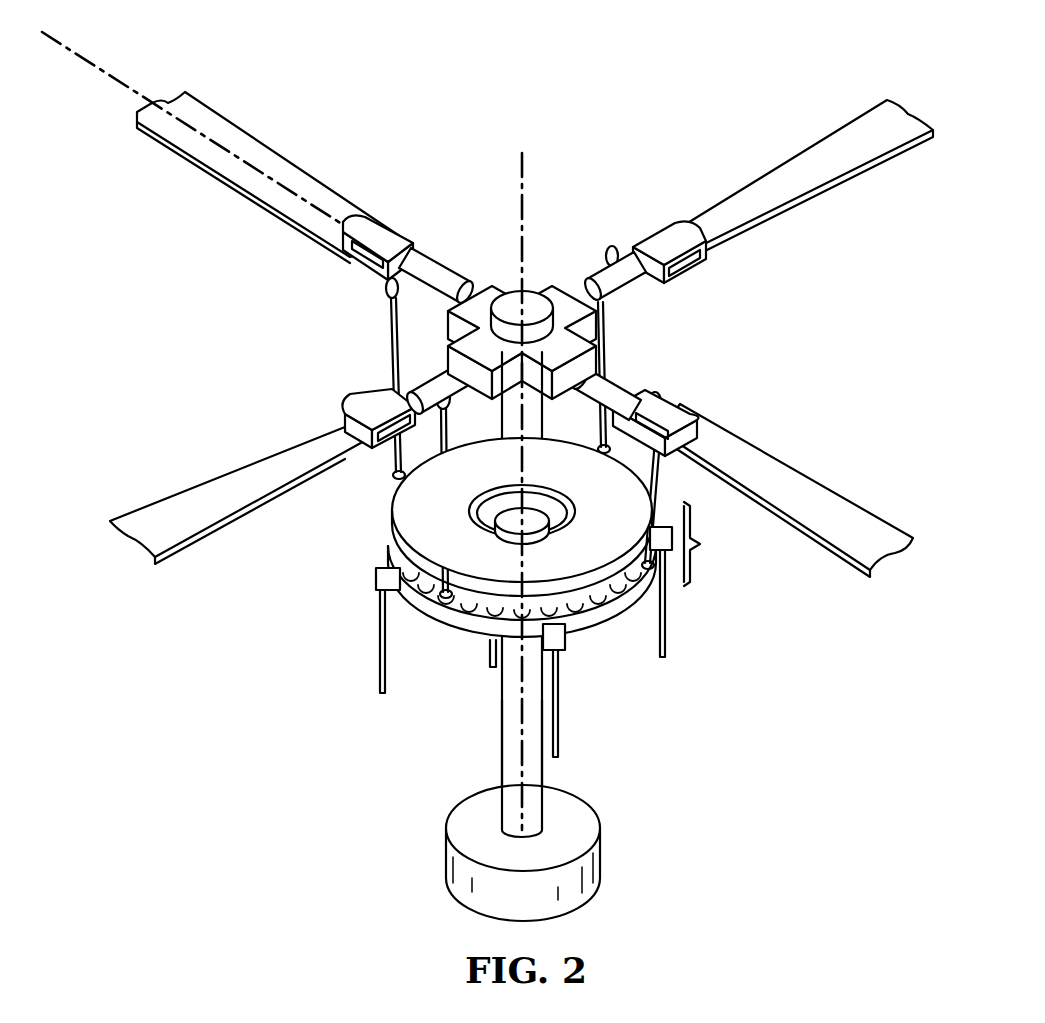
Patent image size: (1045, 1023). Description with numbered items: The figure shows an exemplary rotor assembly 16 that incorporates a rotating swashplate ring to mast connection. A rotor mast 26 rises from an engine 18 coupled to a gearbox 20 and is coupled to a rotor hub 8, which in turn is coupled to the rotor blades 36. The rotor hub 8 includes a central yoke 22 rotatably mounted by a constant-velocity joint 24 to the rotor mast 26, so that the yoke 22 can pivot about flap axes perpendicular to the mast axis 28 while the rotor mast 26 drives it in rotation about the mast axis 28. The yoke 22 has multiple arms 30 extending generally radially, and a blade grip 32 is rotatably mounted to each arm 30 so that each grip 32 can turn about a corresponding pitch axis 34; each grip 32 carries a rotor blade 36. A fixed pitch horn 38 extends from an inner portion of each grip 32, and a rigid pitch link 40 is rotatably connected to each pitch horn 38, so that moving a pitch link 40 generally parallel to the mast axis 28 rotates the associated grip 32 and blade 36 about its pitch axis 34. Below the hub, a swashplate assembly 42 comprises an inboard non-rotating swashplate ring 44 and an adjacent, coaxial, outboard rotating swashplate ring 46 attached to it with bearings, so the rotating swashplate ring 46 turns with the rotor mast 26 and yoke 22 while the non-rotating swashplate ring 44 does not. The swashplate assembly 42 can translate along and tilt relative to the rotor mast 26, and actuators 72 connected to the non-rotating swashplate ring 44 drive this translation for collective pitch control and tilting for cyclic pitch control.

The rotor hub 8 is at (720, 321).
The rotor assembly 16 is at (578, 90).
The engine 18 is at (574, 810).
The gearbox 20 is at (600, 862).
The central yoke 22 is at (487, 292).
The constant-velocity joint 24 is at (538, 290).
The rotor mast 26 is at (502, 738).
The mast axis 28 is at (523, 183).
The arms 30 is at (464, 292).
The blade grip 32 is at (418, 263).
The pitch axis 34 is at (122, 82).
The rotor blades 36 is at (275, 163).
The fixed pitch horn 38 is at (380, 296).
The pitch link 40 is at (392, 342).
The swashplate assembly 42 is at (711, 544).
The non-rotating swashplate ring 44 is at (592, 628).
The rotating swashplate ring 46 is at (408, 505).
The actuators 72 is at (377, 648).